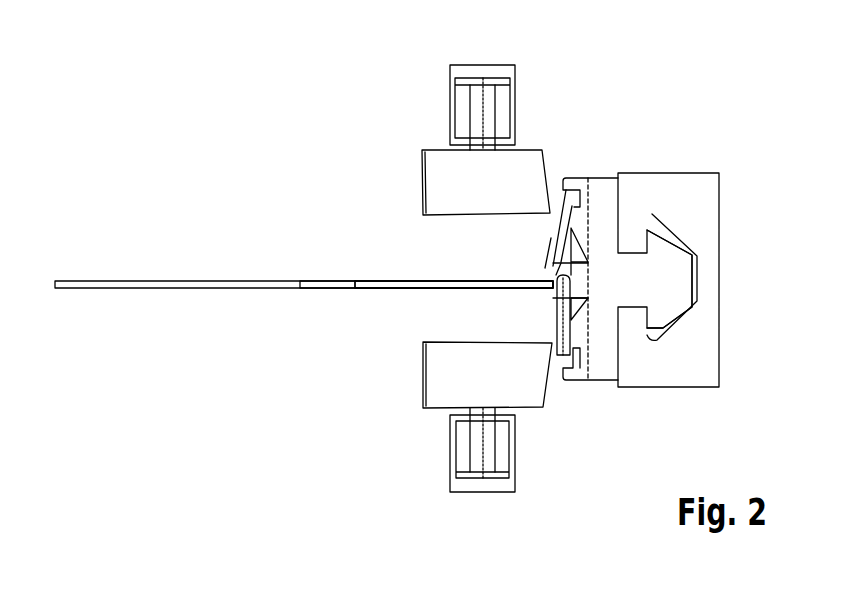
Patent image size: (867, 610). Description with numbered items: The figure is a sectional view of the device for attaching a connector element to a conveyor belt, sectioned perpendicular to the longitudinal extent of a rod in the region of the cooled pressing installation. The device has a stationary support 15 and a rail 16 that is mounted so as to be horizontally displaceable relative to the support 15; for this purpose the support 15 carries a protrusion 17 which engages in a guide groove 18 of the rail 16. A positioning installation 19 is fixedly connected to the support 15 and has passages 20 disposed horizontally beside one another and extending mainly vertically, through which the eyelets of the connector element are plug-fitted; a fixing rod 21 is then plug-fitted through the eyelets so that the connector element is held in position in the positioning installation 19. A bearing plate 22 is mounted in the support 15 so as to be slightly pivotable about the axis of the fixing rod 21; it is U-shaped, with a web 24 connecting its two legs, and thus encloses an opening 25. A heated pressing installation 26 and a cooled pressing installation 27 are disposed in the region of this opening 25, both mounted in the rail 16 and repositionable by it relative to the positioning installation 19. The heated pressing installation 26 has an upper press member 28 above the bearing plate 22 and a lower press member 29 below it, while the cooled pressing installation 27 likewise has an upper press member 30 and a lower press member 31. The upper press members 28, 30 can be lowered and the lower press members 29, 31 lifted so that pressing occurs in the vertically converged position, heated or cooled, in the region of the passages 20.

The stationary support 15 is at (603, 188).
The rail 16 is at (670, 185).
The protrusion 17 is at (670, 273).
The guide groove 18 is at (667, 228).
The positioning installation 19 is at (544, 300).
The passages 20 is at (554, 268).
The fixing rod 21 is at (558, 304).
The bearing plate 22 is at (330, 310).
The web 24 is at (191, 280).
The opening 25 is at (391, 280).
The heated pressing installation 26 is at (439, 83).
The cooled pressing installation 27 is at (427, 97).
The press member 28 is at (437, 182).
The press member 29 is at (438, 375).
The press member 30 is at (440, 179).
The press member 31 is at (440, 375).